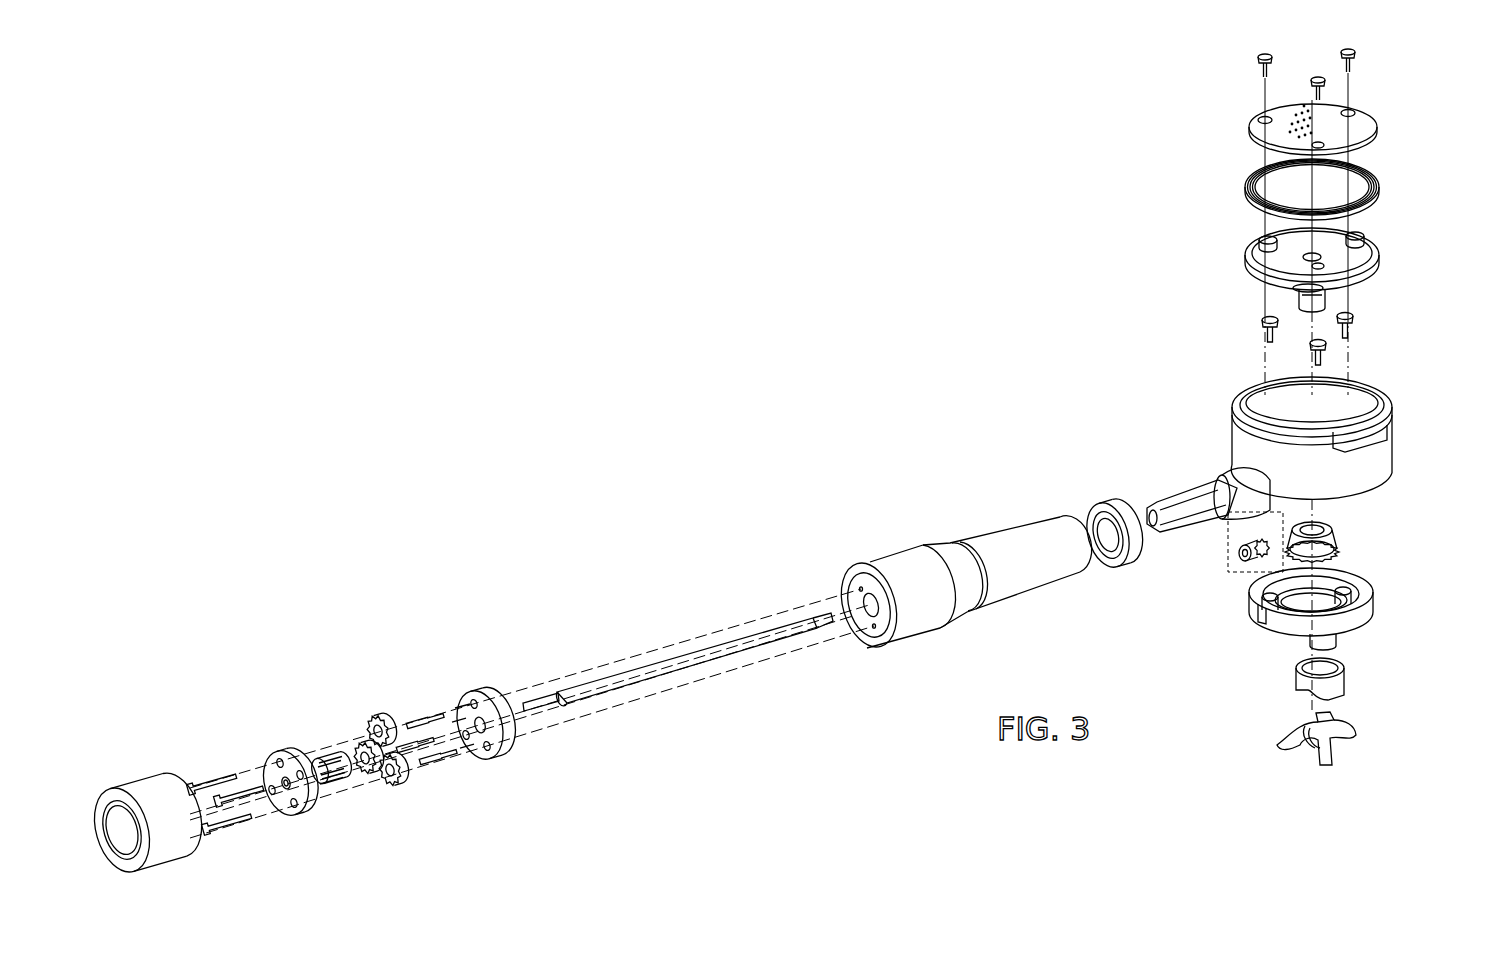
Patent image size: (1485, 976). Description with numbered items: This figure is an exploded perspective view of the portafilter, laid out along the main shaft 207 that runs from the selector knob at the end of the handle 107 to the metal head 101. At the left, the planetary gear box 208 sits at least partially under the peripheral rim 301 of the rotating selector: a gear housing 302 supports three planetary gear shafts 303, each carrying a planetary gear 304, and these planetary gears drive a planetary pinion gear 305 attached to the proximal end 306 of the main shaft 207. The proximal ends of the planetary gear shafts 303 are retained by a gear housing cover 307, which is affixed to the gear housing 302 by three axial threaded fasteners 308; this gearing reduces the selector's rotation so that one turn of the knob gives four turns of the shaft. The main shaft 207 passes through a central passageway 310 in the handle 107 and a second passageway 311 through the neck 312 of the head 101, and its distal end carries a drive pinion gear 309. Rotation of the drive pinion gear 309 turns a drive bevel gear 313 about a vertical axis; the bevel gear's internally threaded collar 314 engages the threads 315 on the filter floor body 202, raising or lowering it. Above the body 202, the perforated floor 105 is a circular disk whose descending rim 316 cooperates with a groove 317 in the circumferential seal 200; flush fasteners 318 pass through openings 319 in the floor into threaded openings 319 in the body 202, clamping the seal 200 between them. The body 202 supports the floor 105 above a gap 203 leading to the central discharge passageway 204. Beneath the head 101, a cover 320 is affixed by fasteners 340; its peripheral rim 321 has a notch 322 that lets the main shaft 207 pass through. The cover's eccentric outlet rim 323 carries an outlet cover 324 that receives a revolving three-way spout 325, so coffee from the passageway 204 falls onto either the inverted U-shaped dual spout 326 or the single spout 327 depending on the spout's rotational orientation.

The head 101 is at (1228, 423).
The perforated floor 105 is at (1370, 120).
The handle 107 is at (1013, 527).
The circumferential seal 200 is at (1375, 183).
The filter floor body 202 is at (1370, 247).
The gap 203 is at (1273, 257).
The central discharge passageway 204 is at (1307, 301).
The main shaft 207 is at (707, 647).
The planetary gear box 208 is at (425, 618).
The peripheral rim 301 is at (137, 782).
The gear housing 302 is at (495, 692).
The planetary gear shafts 303 is at (440, 767).
The planetary gear 304 is at (388, 787).
The planetary pinion gear 305 is at (337, 782).
The proximal end 306 is at (543, 713).
The gear housing cover 307 is at (290, 748).
The threaded fasteners 308 is at (207, 773).
The drive pinion gear 309 is at (1245, 565).
The central passageway 310 is at (893, 642).
The second passageway 311 is at (1153, 503).
The neck 312 is at (1190, 483).
The drive bevel gear 313 is at (1337, 557).
The collar 314 is at (1335, 533).
The threads 315 is at (1327, 293).
The descending rim 316 is at (1247, 135).
The groove 317 is at (1247, 180).
The flush fasteners 318 is at (1255, 60).
The openings 319 is at (1352, 113).
The cover 320 is at (1277, 635).
The peripheral rim 321 is at (1367, 607).
The notch 322 is at (1252, 623).
The outlet rim 323 is at (1347, 638).
The outlet cover 324 is at (1338, 682).
The revolving 3-way spout 325 is at (1340, 750).
The dual spout 326 is at (1303, 747).
The single spout 327 is at (1357, 733).
The fasteners 340 is at (1353, 327).